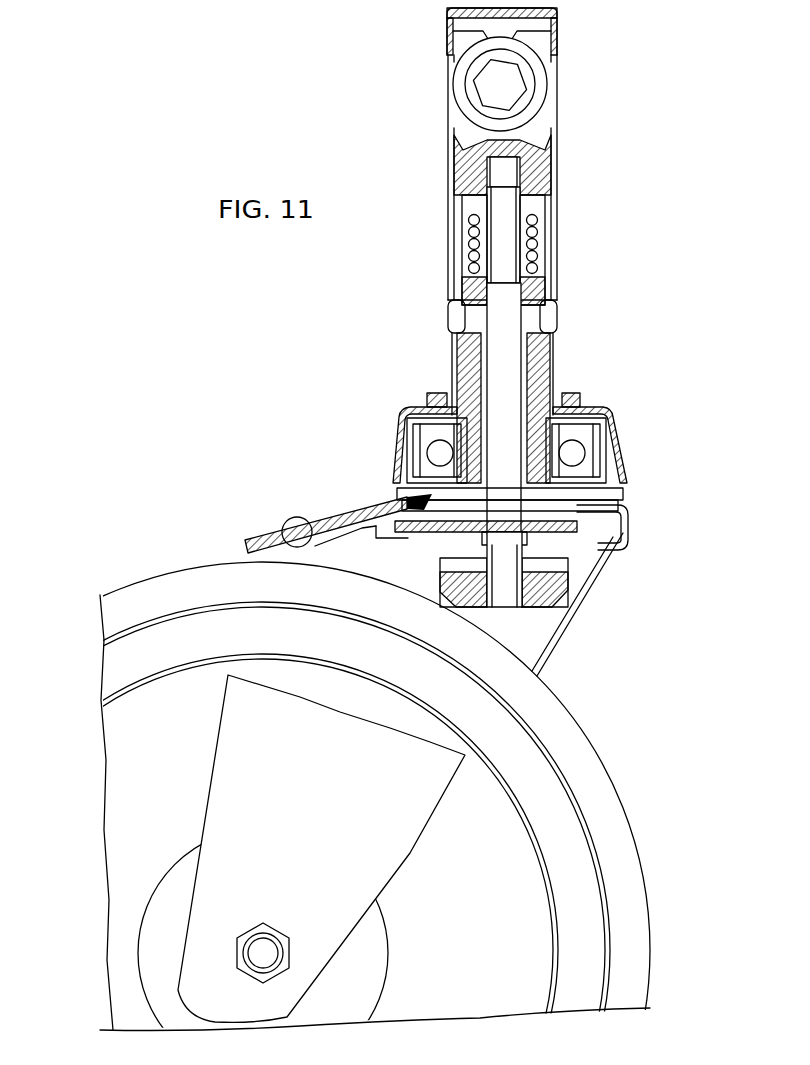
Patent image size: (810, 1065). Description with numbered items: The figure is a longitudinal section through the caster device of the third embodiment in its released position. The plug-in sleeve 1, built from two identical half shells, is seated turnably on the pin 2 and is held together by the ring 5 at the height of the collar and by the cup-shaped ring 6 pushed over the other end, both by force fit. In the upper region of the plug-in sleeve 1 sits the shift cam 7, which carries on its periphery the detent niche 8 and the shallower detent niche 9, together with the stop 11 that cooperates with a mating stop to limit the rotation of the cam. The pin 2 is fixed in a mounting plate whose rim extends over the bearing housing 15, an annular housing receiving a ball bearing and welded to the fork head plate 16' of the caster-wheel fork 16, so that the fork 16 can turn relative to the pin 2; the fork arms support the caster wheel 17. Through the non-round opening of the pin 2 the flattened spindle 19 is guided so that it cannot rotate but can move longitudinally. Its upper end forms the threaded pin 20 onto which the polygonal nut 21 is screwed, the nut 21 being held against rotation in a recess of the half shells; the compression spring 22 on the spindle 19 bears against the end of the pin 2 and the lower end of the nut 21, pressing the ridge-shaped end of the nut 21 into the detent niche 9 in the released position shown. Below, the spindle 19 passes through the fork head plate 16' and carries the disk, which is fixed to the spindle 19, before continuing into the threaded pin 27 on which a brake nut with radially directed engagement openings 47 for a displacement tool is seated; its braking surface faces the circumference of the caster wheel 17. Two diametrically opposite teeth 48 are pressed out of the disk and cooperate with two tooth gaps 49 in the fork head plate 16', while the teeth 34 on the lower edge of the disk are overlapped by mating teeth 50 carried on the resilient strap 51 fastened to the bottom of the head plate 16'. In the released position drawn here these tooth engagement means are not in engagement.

The plug-in sleeve 1 is at (448, 203).
The pin 2 is at (550, 340).
The ring 5 is at (590, 403).
The cup-shaped ring 6 is at (557, 33).
The shift cam 7 is at (547, 83).
The detent niche 8 is at (520, 107).
The detent niche 9 is at (458, 125).
The stop 11 is at (447, 83).
The bearing housing 15 is at (398, 418).
The caster-wheel fork 16 is at (400, 777).
The fork head plate 16' is at (329, 463).
The caster wheel 17 is at (613, 825).
The spindle 19 is at (510, 368).
The threaded pin 20 is at (505, 205).
The nut 21 is at (525, 170).
The compression spring 22 is at (538, 235).
The threaded pin 27 is at (512, 587).
The teeth 34 is at (627, 530).
The engagement openings 47 is at (560, 563).
The teeth 48 is at (433, 532).
The tooth gaps 49 is at (407, 477).
The mating teeth 50 is at (400, 542).
The resilient strap 51 is at (363, 530).